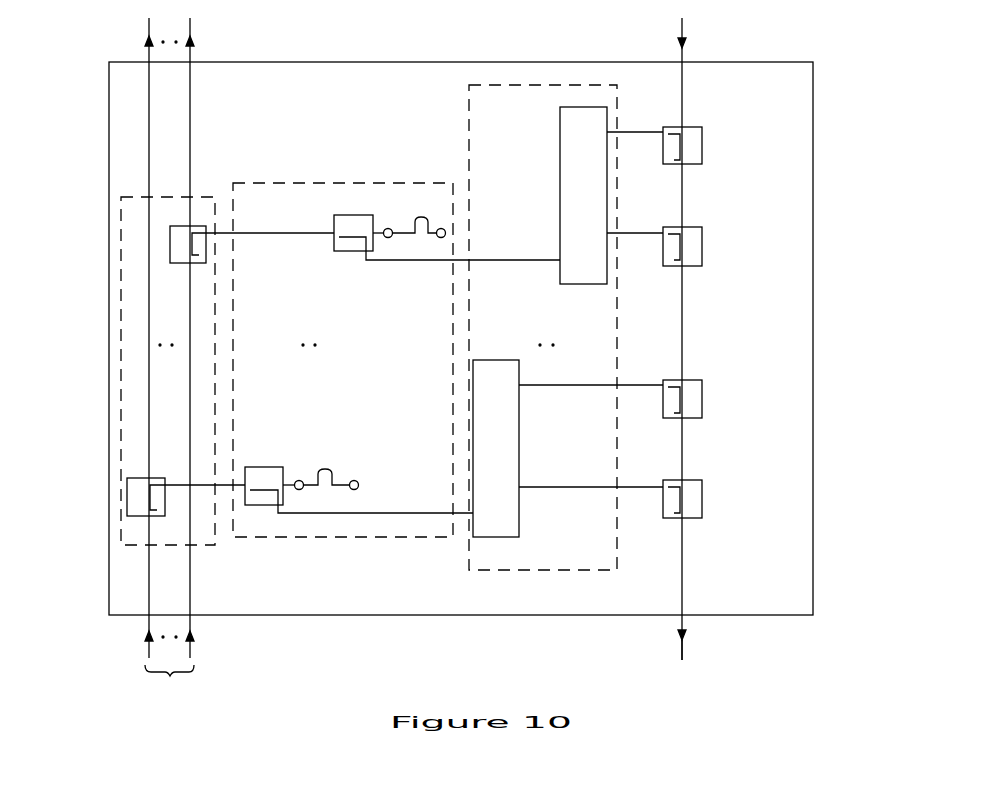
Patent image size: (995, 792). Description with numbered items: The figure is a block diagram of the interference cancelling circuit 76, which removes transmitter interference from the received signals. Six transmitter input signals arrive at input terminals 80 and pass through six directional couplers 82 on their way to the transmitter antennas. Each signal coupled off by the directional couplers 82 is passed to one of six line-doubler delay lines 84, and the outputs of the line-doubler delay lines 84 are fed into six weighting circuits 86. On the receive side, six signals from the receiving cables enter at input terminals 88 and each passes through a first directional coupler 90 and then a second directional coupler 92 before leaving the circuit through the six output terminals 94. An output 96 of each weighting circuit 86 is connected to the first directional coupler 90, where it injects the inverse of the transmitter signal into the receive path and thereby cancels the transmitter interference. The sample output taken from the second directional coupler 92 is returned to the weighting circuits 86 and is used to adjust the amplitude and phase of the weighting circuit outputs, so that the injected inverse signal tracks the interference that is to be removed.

The interference cancelling circuit 76 is at (300, 62).
The input terminals 80 is at (169, 358).
The directional couplers 82 is at (121, 252).
The line-doubler delay lines 84 is at (400, 183).
The weighting circuits 86 is at (555, 85).
The input terminals 88 is at (682, 32).
The first directional coupler 90 is at (690, 127).
The second directional coupler 92 is at (688, 227).
The output terminals 94 is at (680, 650).
The output 96 is at (632, 132).